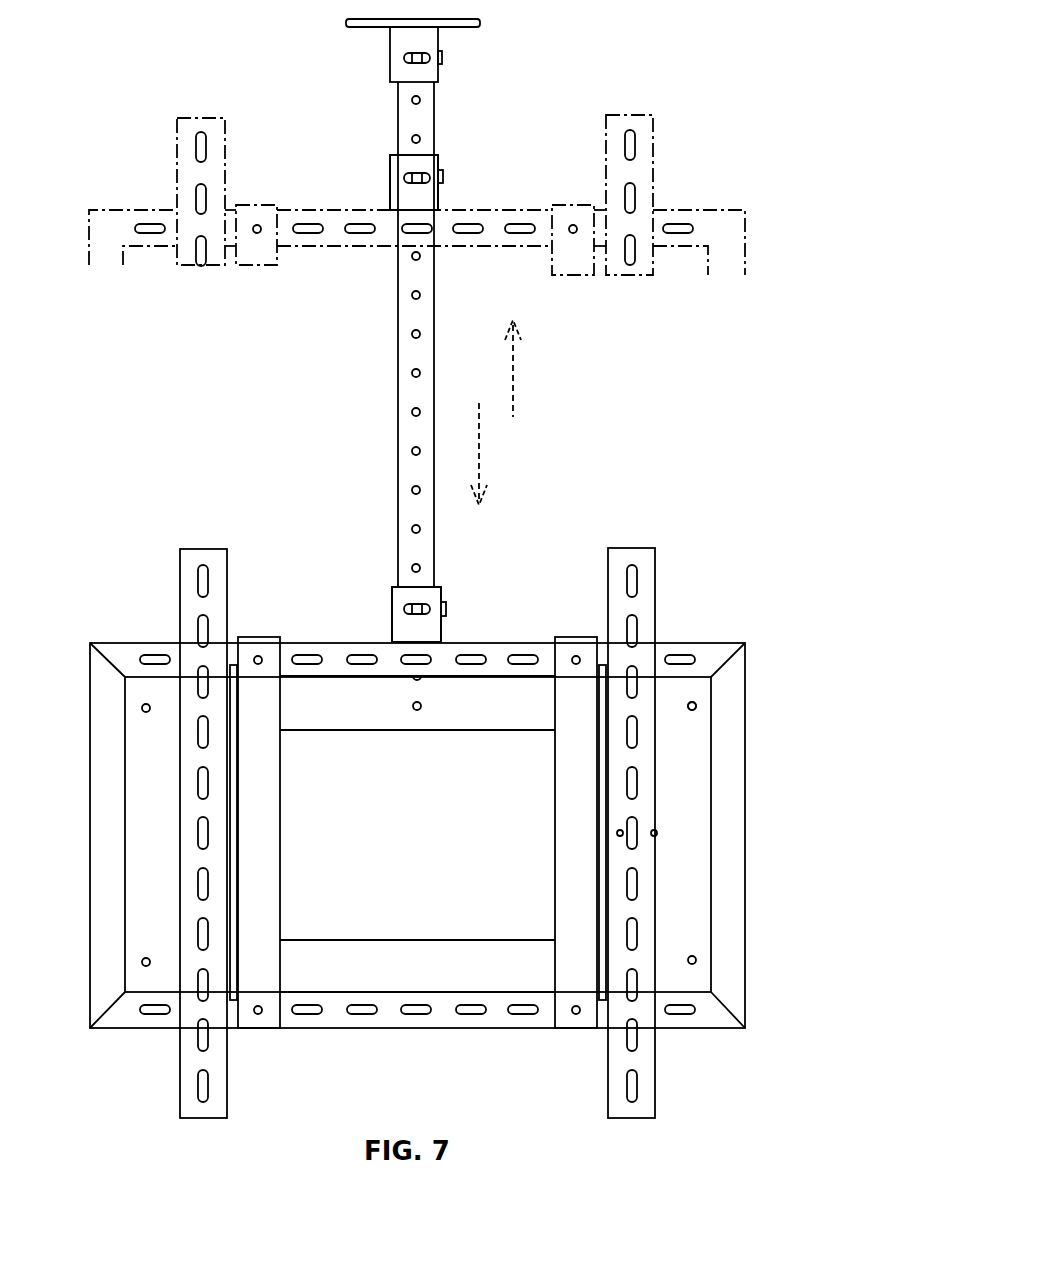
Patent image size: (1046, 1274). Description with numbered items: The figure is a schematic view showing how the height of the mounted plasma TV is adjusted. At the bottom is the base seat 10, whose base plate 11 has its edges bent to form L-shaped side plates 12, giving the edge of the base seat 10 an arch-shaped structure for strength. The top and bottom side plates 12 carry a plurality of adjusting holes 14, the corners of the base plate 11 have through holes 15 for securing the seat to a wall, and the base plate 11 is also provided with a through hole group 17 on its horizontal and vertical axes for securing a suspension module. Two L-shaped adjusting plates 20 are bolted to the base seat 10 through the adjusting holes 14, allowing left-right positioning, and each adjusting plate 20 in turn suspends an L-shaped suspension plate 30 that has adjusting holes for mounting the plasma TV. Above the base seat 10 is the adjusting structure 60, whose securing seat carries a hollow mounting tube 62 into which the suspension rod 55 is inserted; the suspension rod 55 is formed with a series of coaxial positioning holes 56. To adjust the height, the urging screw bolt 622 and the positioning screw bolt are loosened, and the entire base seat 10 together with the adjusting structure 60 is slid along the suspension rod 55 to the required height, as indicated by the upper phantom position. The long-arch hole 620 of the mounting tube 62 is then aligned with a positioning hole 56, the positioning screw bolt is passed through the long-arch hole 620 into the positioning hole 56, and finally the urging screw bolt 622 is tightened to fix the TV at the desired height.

The base seat 10 is at (88, 203).
The base plate 11 is at (445, 985).
The side plate 12 is at (374, 1028).
The adjusting hole 14 is at (312, 1018).
The through hole 15 is at (696, 706).
The through hole group 17 is at (414, 702).
The adjusting plate 20 is at (257, 205).
The suspension plate 30 is at (177, 166).
The suspension rod 55 is at (398, 328).
The positioning hole 56 is at (412, 413).
The adjusting structure 60 is at (382, 158).
The mounting tube 62 is at (440, 195).
The long-arch hole 620 is at (422, 606).
The urging screw bolt 622 is at (446, 609).